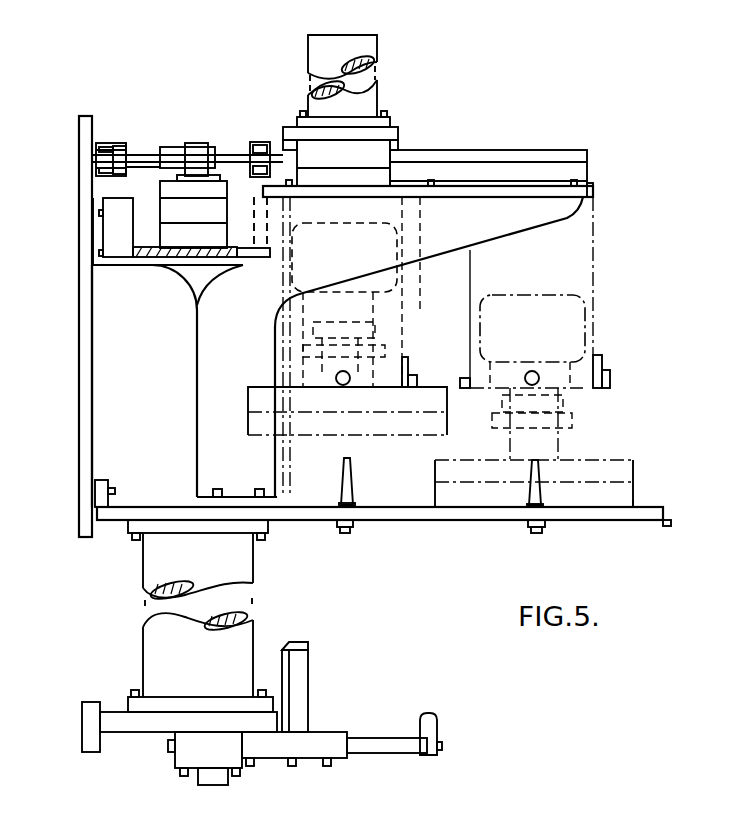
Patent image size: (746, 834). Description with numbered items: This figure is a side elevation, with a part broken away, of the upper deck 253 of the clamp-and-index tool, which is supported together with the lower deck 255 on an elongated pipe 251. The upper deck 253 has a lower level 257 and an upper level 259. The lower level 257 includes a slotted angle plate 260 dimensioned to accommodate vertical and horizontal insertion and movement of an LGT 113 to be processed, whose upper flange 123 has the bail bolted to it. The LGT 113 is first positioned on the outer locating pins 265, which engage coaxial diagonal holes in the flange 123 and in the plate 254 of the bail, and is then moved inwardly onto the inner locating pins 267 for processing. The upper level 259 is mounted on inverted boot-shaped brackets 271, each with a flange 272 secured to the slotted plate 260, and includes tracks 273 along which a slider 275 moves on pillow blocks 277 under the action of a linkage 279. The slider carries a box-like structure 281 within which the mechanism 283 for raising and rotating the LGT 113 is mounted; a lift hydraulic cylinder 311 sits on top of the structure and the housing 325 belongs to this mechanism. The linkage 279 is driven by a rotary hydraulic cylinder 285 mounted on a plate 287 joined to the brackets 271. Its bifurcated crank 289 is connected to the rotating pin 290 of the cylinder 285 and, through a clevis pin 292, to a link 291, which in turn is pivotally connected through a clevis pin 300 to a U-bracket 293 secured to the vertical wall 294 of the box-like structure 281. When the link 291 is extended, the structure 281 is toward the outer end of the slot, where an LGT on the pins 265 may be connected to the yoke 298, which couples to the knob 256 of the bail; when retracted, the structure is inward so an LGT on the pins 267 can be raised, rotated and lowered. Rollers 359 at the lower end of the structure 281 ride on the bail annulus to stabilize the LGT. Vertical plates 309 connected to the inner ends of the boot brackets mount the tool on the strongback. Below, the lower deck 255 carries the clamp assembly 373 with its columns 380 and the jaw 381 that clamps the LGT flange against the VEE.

The LGT 113 is at (647, 498).
The upper flange 123 is at (258, 425).
The elongated pipe 251 is at (147, 640).
The upper deck 253 is at (662, 354).
The plate of the bail 254 is at (453, 430).
The lower deck 255 is at (533, 742).
The knob of the bail 256 is at (383, 350).
The lower level 257 is at (440, 523).
The upper level 259 is at (430, 147).
The slotted angle plate 260 is at (293, 523).
The outer locating pins 265 is at (532, 475).
The inner locating pins 267 is at (342, 477).
The boot-shaped brackets 271 is at (549, 211).
The flange 272 is at (230, 497).
The tracks 273 is at (537, 157).
The slider 275 is at (375, 131).
The pillow blocks 277 is at (383, 155).
The linkage 279 is at (178, 142).
The box-like structure 281 is at (662, 221).
The mechanism 283 is at (403, 347).
The rotary hydraulic cylinder 285 is at (172, 188).
The plate 287 is at (152, 267).
The bifurcated crank 289 is at (122, 146).
The rotating pin 290 is at (197, 145).
The link 291 is at (150, 165).
The clevis pin 292 is at (103, 142).
The U-bracket 293 is at (276, 156).
The vertical wall 294 is at (257, 140).
The yoke 298 is at (503, 425).
The clevis pin 300 is at (274, 270).
The vertical plates 309 is at (83, 377).
The lift hydraulic cylinder 311 is at (378, 47).
The housing 325 is at (398, 242).
The rollers 359 is at (417, 380).
The clamp assembly 373 is at (360, 763).
The columns 380 is at (302, 673).
The jaw 381 is at (432, 725).